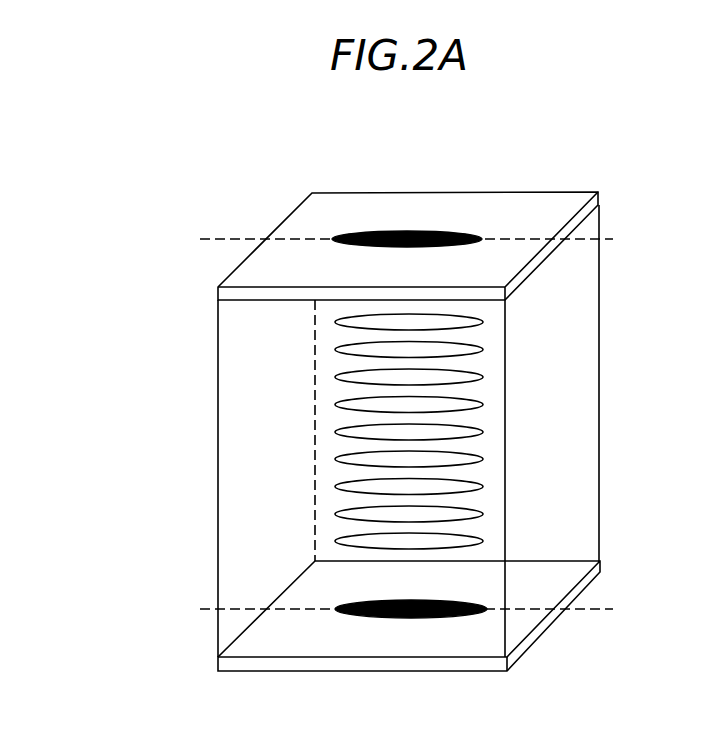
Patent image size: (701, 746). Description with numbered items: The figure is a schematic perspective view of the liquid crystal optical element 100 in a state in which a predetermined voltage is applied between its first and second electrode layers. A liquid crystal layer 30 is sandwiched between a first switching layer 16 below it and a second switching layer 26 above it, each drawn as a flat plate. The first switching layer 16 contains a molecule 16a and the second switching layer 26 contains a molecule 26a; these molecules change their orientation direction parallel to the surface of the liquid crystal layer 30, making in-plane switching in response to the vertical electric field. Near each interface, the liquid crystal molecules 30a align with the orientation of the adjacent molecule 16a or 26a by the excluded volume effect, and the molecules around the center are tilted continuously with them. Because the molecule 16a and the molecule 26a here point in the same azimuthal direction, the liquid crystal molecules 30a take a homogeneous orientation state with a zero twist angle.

The liquid crystal optical element 100 is at (521, 182).
The second switching layer 26 is at (228, 297).
The molecule 26a is at (390, 232).
The liquid crystal layer 30 is at (152, 304).
The liquid crystal molecules 30a is at (452, 432).
The first switching layer 16 is at (230, 665).
The molecule 16a is at (410, 618).